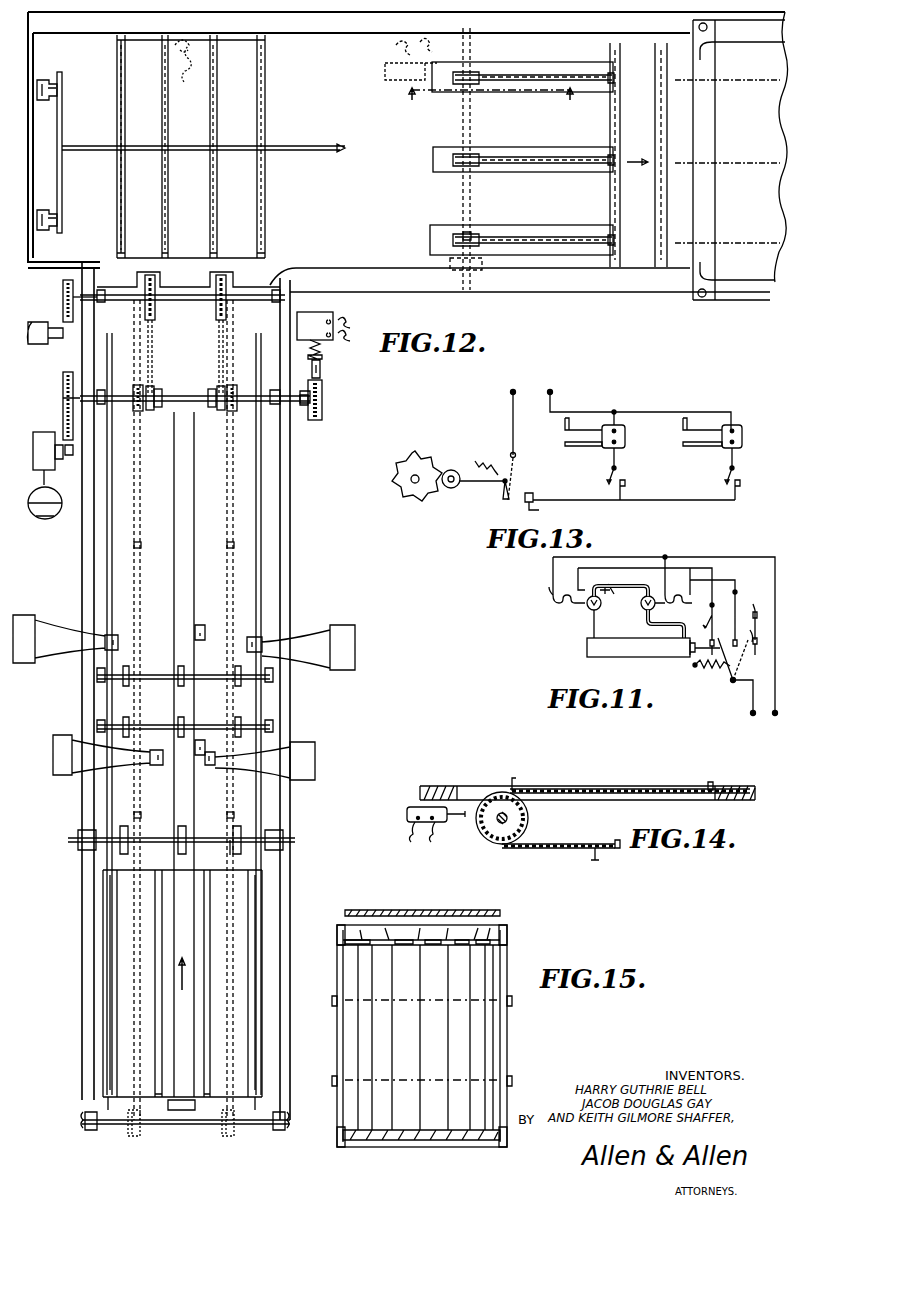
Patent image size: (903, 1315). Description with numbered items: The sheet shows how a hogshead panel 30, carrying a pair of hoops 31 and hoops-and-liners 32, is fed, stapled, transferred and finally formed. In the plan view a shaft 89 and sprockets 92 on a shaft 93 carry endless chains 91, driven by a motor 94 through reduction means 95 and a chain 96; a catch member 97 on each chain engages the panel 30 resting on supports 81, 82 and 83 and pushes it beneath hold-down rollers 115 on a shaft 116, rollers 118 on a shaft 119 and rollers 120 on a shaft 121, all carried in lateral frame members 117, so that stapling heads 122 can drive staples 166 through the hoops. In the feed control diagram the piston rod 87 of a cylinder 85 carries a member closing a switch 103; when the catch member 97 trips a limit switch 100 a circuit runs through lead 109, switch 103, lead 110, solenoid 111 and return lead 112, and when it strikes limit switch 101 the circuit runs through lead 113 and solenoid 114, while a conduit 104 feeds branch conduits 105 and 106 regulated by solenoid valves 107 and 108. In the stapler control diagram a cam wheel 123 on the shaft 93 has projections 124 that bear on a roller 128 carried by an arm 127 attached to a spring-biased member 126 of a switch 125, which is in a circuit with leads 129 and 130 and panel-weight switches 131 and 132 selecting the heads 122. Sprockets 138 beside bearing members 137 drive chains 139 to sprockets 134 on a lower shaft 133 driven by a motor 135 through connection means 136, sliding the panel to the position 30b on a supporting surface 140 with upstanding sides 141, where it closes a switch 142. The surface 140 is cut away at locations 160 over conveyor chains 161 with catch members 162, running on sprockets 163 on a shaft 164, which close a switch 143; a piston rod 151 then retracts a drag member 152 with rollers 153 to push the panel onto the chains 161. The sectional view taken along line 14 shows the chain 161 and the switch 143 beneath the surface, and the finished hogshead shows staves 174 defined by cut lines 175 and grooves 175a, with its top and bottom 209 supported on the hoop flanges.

In FIG. 12, the section line 14— 14 is at (490, 106).
In FIG. 12, the panel 30 is at (133, 917).
In FIG. 14, the panel 30 is at (730, 784).
In FIG. 15, the panel 30 is at (508, 1046).
In FIG. 12, the panel in saw-feed position 30b is at (135, 84).
In FIG. 12, the hoops 31 is at (205, 938).
In FIG. 15, the hoops 31 is at (512, 1000).
In FIG. 12, the hoops-and-liners 32 is at (115, 1018).
In FIG. 15, the hoops-and-liners 32 is at (338, 930).
In FIG. 12, the support 81 is at (110, 1120).
In FIG. 12, the support 82 is at (184, 1108).
In FIG. 12, the support 83 is at (263, 1110).
In FIG. 11, the cylinder 85 is at (598, 660).
In FIG. 11, the piston rod 87 is at (713, 680).
In FIG. 12, the shaft 89 is at (200, 1124).
In FIG. 12, the endless chains 91 is at (139, 490).
In FIG. 12, the sprockets 92 is at (136, 384).
In FIG. 12, the shaft 93 is at (181, 394).
In FIG. 12, the motor 94 is at (40, 510).
In FIG. 12, the reduction means 95 is at (45, 432).
In FIG. 12, the chain 96 is at (62, 374).
In FIG. 12, the catch member 97 is at (142, 547).
In FIG. 11, the limit switch 100 is at (729, 622).
In FIG. 11, the limit switch 101 is at (764, 616).
In FIG. 11, the switch 103 is at (720, 644).
In FIG. 11, the conduit 104 is at (616, 588).
In FIG. 11, the branch conduit 105 is at (621, 597).
In FIG. 11, the branch conduit 106 is at (665, 582).
In FIG. 11, the solenoid controlled valve 107 is at (590, 610).
In FIG. 11, the solenoid controlled valve 108 is at (641, 614).
In FIG. 11, the lead 109 is at (751, 705).
In FIG. 11, the lead 110 is at (706, 574).
In FIG. 11, the solenoid 111 is at (564, 606).
In FIG. 11, the return lead 112 is at (768, 720).
In FIG. 11, the lead 113 is at (721, 582).
In FIG. 11, the solenoid 114 is at (687, 595).
In FIG. 12, the hold-down rollers 115 is at (276, 860).
In FIG. 12, the shaft 116 is at (230, 846).
In FIG. 12, the lateral frame members 117 is at (282, 702).
In FIG. 12, the hold-down rollers 118 is at (140, 716).
In FIG. 12, the shaft 119 is at (218, 708).
In FIG. 12, the rollers 120 is at (142, 669).
In FIG. 12, the shaft 121 is at (212, 670).
In FIG. 12, the stapling head 122 is at (108, 636).
In FIG. 13, the stapling head 122 is at (565, 440).
In FIG. 12, the cam wheel 123 is at (323, 398).
In FIG. 13, the cam wheel 123 is at (397, 500).
In FIG. 13, the projections 124 is at (399, 468).
In FIG. 12, the switch 125 is at (326, 312).
In FIG. 13, the switch 125 is at (630, 506).
In FIG. 12, the spring-biased member 126 is at (325, 376).
In FIG. 13, the spring-biased member 126 is at (501, 496).
In FIG. 12, the arm 127 is at (321, 362).
In FIG. 13, the arm 127 is at (490, 484).
In FIG. 13, the roller 128 is at (452, 470).
In FIG. 13, the lead 129 is at (509, 406).
In FIG. 13, the lead 130 is at (626, 412).
In FIG. 12, the switch 131 is at (195, 740).
In FIG. 13, the switch 131 is at (625, 482).
In FIG. 12, the switch 132 is at (199, 624).
In FIG. 13, the switch 132 is at (742, 484).
In FIG. 12, the shaft 133 is at (173, 303).
In FIG. 12, the sprockets 134 is at (144, 312).
In FIG. 12, the motor 135 is at (38, 342).
In FIG. 12, the connection means 136 is at (54, 308).
In FIG. 12, the bearing members 137 is at (152, 384).
In FIG. 12, the sprockets 138 is at (156, 410).
In FIG. 12, the chains 139 is at (155, 340).
In FIG. 12, the supporting surface 140 is at (333, 40).
In FIG. 12, the upstanding sides 141 is at (110, 24).
In FIG. 12, the switch 142 is at (216, 28).
In FIG. 12, the switch 143 is at (384, 80).
In FIG. 14, the switch 143 is at (407, 812).
In FIG. 12, the piston rod 151 is at (340, 136).
In FIG. 12, the drag member 152 is at (62, 118).
In FIG. 12, the rollers 153 is at (44, 80).
In FIG. 12, the cutaway locations 160 is at (576, 60).
In FIG. 12, the conveyor chains 161 is at (526, 82).
In FIG. 14, the conveyor chains 161 is at (628, 786).
In FIG. 14, the catch members 162 is at (598, 860).
In FIG. 12, the sprockets 163 is at (478, 230).
In FIG. 12, the shaft 164 is at (460, 290).
In FIG. 12, the staples 166 is at (116, 206).
In FIG. 15, the staples 166 is at (404, 1000).
In FIG. 15, the staves 174 is at (381, 1046).
In FIG. 15, the lines of cut 175 is at (422, 1026).
In FIG. 15, the grooved areas 175a is at (424, 1000).
In FIG. 15, the top and bottom 209 is at (352, 908).